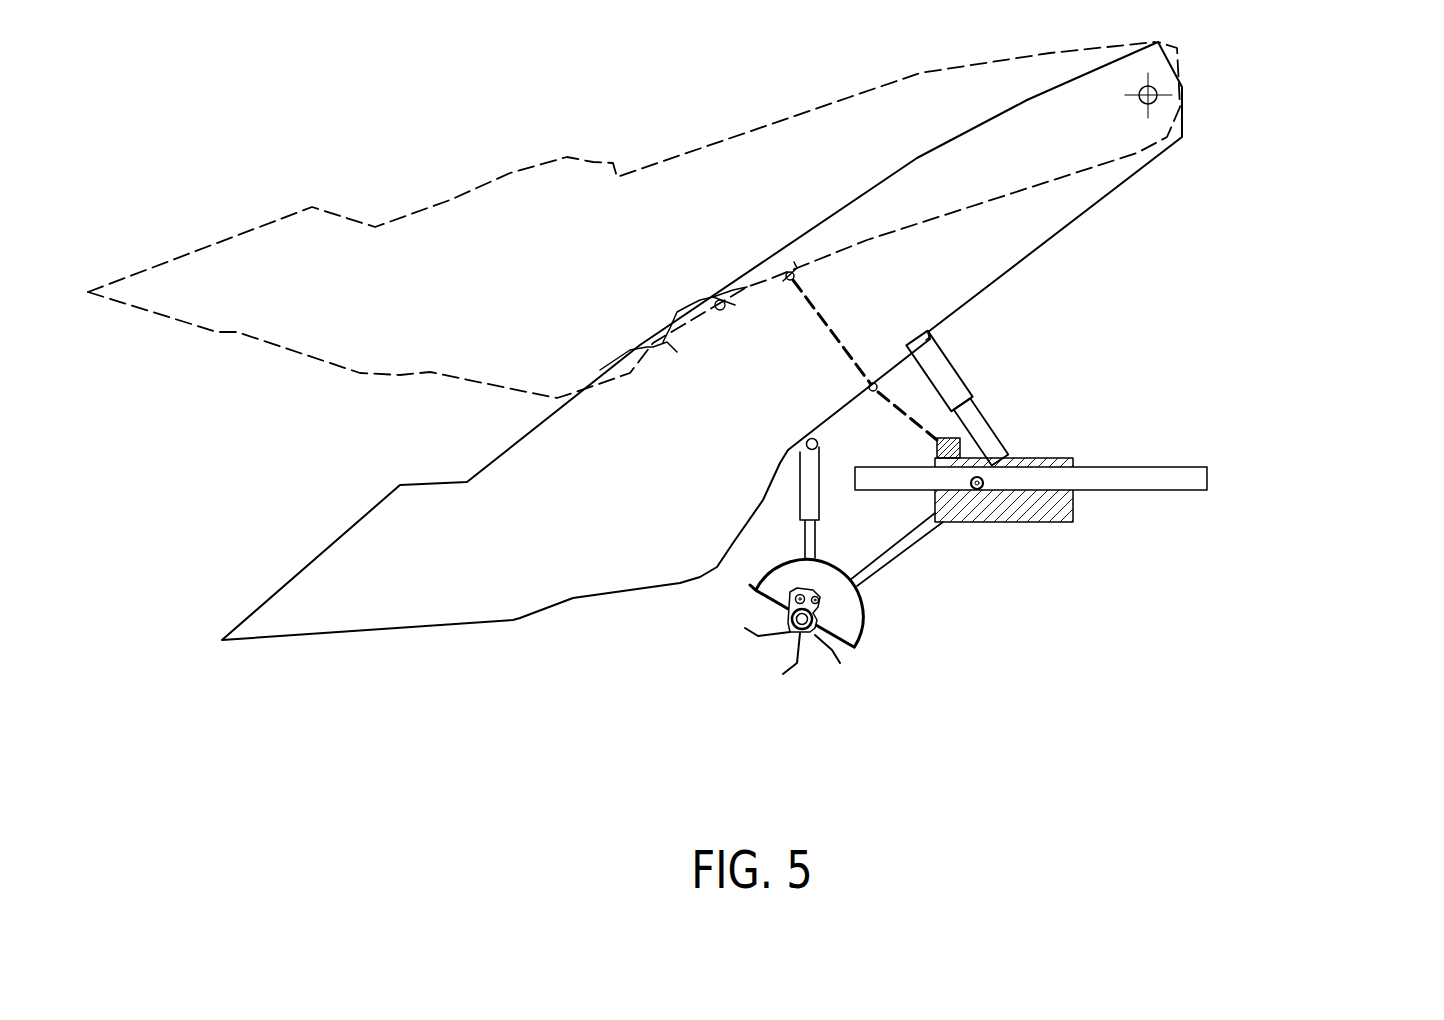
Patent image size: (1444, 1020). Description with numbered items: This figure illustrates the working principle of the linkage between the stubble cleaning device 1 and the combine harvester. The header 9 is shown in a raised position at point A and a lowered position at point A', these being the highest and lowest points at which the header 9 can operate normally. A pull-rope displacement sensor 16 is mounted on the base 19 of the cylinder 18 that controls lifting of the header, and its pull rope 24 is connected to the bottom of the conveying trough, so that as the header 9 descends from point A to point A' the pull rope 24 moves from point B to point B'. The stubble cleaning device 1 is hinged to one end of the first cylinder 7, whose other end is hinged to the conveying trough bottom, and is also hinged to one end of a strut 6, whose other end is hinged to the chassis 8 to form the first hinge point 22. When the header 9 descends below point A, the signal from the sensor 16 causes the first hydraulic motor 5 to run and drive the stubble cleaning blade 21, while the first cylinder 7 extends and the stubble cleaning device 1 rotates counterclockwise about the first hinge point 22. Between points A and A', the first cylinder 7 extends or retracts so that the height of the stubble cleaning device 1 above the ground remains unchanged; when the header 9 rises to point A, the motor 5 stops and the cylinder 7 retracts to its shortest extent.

The stubble cleaning device 1 is at (840, 617).
The first hydraulic motor 5 is at (817, 613).
The strut 6 is at (917, 527).
The first cylinder 7 is at (810, 470).
The chassis 8 is at (1192, 478).
The header 9 is at (400, 565).
The pull-rope displacement sensor 16 is at (960, 450).
The cylinder 18 is at (967, 413).
The base 19 is at (1073, 500).
The stubble cleaning blade 21 is at (767, 637).
The first hinge point 22 is at (983, 487).
The pull rope 24 is at (900, 397).